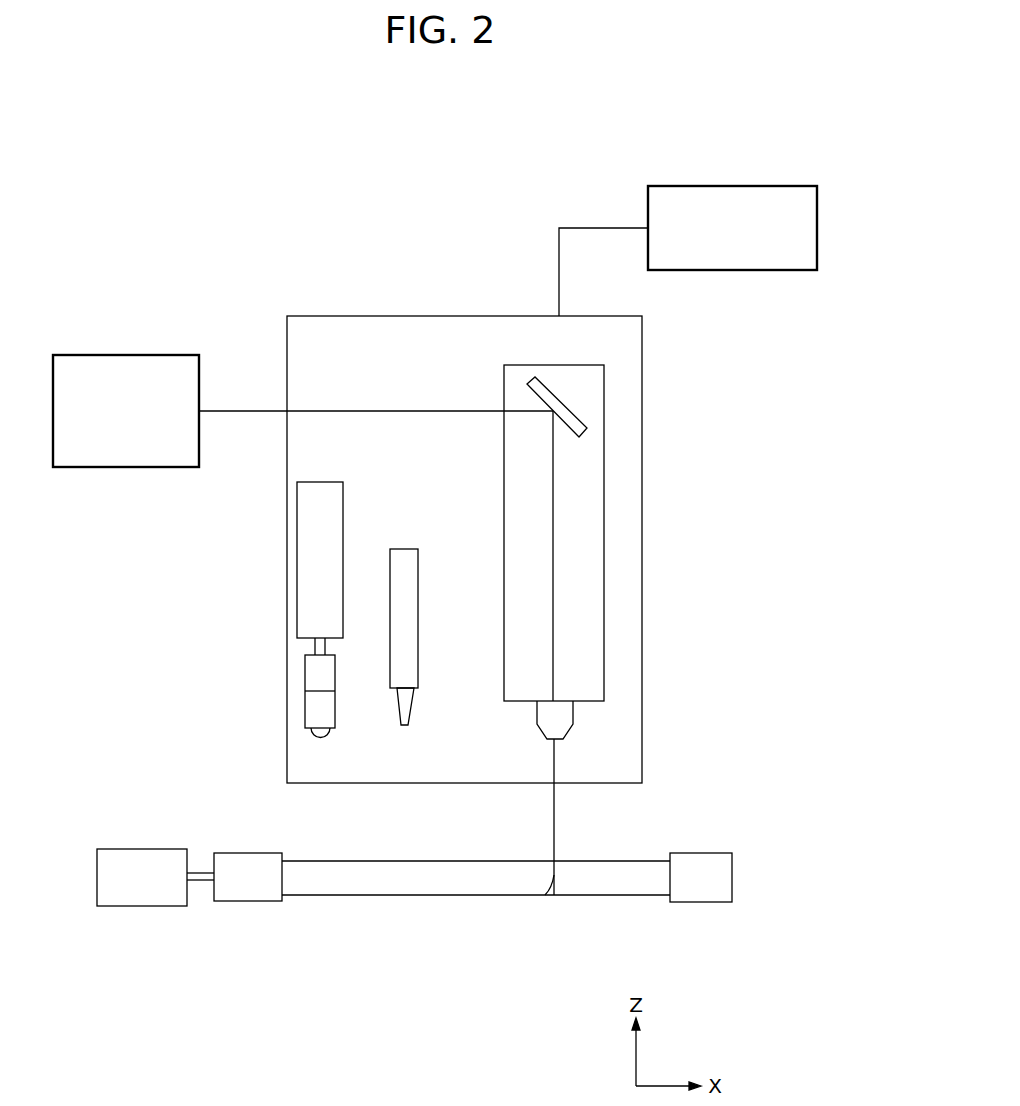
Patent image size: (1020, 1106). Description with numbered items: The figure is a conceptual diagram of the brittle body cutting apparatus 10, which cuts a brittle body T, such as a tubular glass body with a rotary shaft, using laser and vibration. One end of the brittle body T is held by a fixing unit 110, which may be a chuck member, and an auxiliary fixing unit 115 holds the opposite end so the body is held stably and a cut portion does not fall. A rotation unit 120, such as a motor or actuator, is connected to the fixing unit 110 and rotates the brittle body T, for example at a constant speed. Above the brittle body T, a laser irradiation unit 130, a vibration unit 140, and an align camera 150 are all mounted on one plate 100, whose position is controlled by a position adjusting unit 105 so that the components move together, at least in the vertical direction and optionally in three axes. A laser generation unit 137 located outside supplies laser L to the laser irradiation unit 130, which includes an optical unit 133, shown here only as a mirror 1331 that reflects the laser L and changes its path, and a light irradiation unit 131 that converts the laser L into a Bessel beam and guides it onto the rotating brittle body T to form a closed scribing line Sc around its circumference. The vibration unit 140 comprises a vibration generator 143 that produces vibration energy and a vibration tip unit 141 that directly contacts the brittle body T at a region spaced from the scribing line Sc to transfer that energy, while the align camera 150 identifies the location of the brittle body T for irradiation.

The brittle body cutting apparatus 10 is at (262, 172).
The position adjusting unit 105 is at (740, 186).
The laser generation unit 137 is at (127, 355).
The plate 100 is at (642, 347).
The laser irradiation unit 130 is at (642, 552).
The optical unit 133 is at (604, 568).
The mirror 1331 is at (582, 418).
The light irradiation unit 131 is at (631, 720).
The vibration unit 140 is at (246, 616).
The vibration generator 143 is at (306, 583).
The vibration tip unit 141 is at (270, 703).
The align camera 150 is at (412, 540).
The rotation unit 120 is at (150, 894).
The fixing unit 110 is at (248, 890).
The auxiliary fixing unit 115 is at (700, 893).
The brittle body T is at (446, 885).
The laser L is at (554, 822).
The scribing line Sc is at (545, 895).